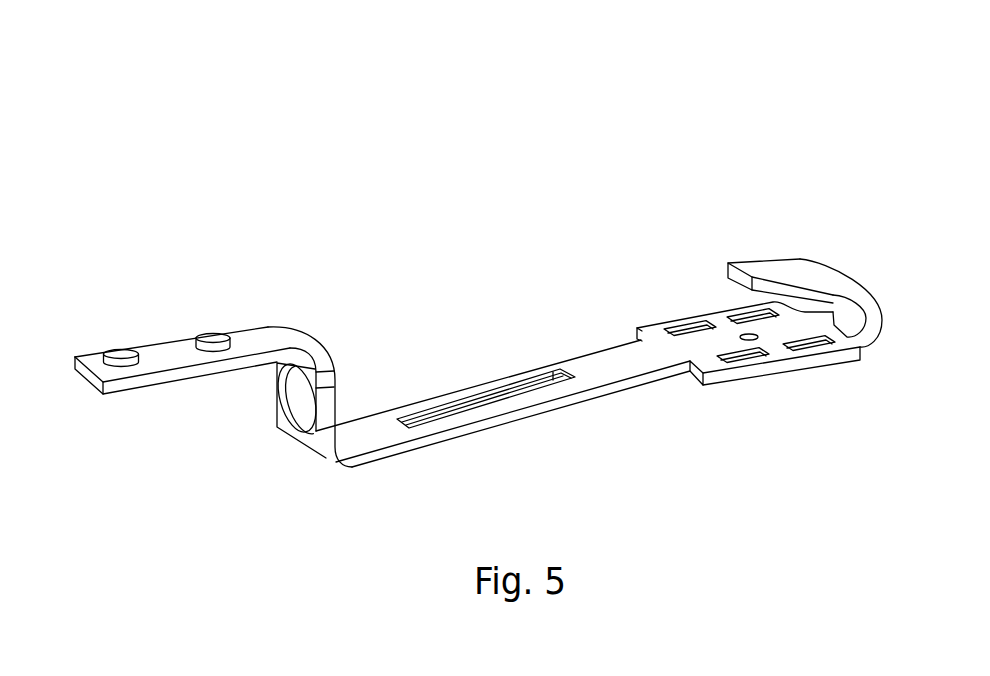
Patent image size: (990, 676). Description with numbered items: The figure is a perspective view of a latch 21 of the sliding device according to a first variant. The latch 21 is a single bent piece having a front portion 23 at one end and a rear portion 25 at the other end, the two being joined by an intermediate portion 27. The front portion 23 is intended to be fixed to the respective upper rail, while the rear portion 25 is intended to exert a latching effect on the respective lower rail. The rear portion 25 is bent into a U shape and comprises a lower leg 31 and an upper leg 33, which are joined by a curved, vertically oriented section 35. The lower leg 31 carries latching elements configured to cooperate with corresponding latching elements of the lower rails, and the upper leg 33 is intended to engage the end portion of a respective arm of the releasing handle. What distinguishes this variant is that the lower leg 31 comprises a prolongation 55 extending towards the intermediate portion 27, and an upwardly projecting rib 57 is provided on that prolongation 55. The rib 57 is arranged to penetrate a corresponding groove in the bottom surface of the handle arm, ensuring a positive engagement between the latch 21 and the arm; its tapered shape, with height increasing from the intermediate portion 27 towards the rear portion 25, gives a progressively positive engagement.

The latch 21 is at (835, 137).
The front portion 23 is at (255, 337).
The rear portion 25 is at (707, 317).
The intermediate portion 27 is at (275, 402).
The lower leg 31 is at (703, 352).
The upper leg 33 is at (791, 267).
The curved, vertically oriented section 35 is at (886, 320).
The prolongation 55 is at (511, 423).
The upwardly projecting rib 57 is at (493, 378).